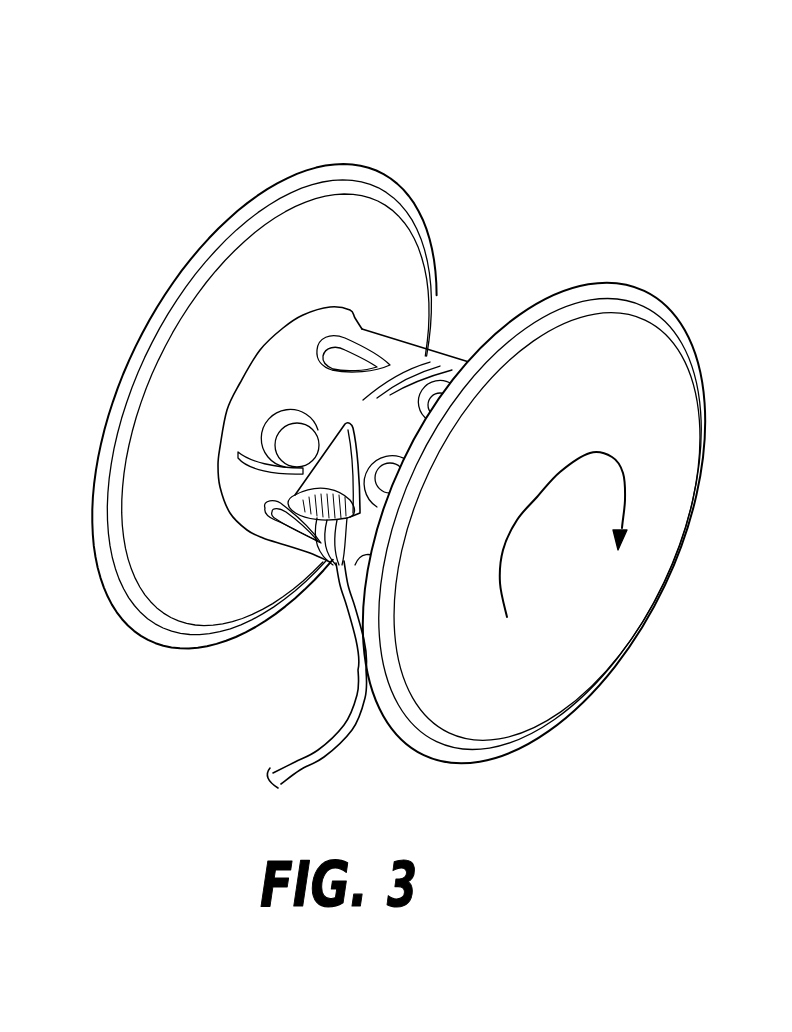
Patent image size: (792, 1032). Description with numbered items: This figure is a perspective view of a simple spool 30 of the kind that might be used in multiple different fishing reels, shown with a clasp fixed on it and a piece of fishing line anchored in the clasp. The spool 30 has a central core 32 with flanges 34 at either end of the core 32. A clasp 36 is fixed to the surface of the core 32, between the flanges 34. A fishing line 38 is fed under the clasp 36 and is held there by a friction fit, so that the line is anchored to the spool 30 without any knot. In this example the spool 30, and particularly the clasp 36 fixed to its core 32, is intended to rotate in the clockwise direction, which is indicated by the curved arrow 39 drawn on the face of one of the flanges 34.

The spool 30 is at (422, 427).
The core 32 is at (394, 414).
The flanges 34 is at (203, 313).
The clasp 36 is at (330, 460).
The fishing line 38 is at (347, 637).
The arrow 39 is at (623, 473).